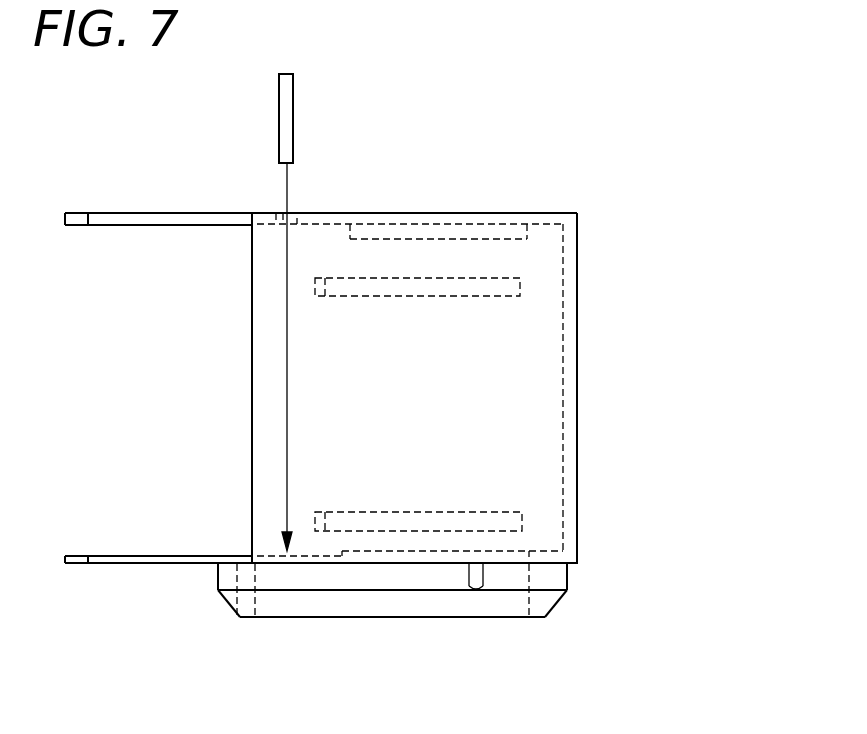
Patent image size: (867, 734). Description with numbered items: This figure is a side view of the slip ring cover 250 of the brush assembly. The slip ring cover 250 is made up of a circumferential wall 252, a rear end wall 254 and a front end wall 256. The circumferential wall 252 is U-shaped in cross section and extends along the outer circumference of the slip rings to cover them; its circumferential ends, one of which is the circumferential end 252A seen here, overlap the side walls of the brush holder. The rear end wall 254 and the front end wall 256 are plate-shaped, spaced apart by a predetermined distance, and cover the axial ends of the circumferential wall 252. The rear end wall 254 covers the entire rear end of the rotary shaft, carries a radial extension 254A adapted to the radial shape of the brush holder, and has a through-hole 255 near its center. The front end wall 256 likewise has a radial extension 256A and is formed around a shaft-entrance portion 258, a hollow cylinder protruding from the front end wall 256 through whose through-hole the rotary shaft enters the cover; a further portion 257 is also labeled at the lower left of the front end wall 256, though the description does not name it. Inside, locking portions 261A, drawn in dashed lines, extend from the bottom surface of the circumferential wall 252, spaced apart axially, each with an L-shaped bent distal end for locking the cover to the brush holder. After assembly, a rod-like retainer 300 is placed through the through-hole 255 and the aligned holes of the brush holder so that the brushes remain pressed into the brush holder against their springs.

The slip ring cover 250 is at (537, 191).
The circumferential wall 252 is at (541, 394).
The circumferential end 252A is at (252, 402).
The rear end wall 254 is at (345, 213).
The radial extension 254A is at (157, 213).
The through-hole 255 is at (280, 212).
The front end wall 256 is at (367, 565).
The radial extension 256A is at (132, 566).
The left foot of bracket 257 is at (247, 605).
The shaft-entrance portion 258 is at (567, 575).
The locking portion 261A is at (467, 289).
The retainer 300 is at (288, 95).